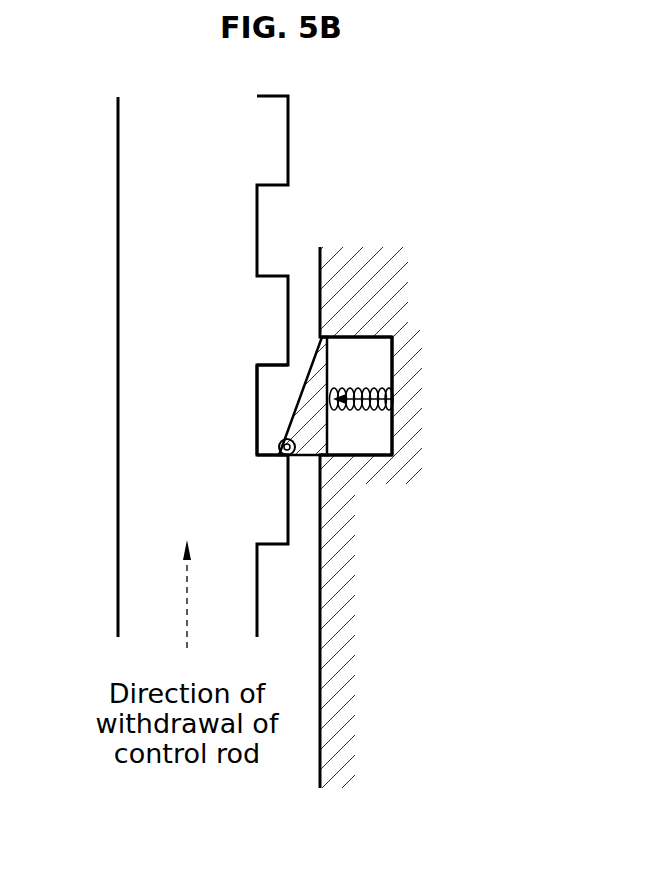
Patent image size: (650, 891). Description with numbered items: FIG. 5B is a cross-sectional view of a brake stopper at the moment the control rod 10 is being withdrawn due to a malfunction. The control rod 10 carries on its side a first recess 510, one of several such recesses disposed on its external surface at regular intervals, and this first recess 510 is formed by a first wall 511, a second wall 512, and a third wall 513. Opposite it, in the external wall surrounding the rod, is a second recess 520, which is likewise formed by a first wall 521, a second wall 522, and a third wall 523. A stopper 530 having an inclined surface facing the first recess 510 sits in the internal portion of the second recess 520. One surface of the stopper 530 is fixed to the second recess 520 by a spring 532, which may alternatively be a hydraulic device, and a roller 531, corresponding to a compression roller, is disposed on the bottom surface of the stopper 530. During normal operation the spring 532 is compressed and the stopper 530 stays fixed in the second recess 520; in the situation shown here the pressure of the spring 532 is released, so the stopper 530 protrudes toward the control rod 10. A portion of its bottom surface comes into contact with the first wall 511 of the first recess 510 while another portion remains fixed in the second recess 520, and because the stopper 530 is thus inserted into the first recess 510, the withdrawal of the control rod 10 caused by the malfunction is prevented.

The control rod 10 is at (117, 405).
The first recess 510 is at (270, 432).
The first wall 511 is at (268, 458).
The second wall 512 is at (259, 399).
The third wall 513 is at (268, 365).
The second recess 520 is at (393, 345).
The first wall 521 is at (345, 338).
The second wall 522 is at (374, 366).
The third wall 523 is at (362, 455).
The stopper 530 is at (412, 415).
The roller 531 is at (290, 452).
The spring 532 is at (393, 393).